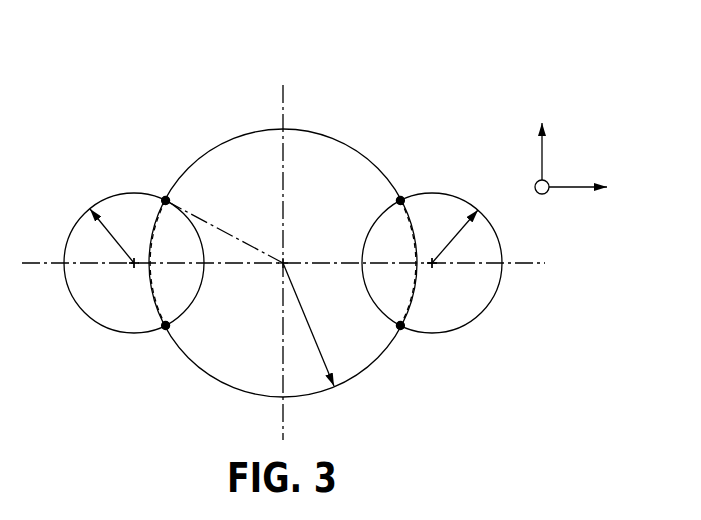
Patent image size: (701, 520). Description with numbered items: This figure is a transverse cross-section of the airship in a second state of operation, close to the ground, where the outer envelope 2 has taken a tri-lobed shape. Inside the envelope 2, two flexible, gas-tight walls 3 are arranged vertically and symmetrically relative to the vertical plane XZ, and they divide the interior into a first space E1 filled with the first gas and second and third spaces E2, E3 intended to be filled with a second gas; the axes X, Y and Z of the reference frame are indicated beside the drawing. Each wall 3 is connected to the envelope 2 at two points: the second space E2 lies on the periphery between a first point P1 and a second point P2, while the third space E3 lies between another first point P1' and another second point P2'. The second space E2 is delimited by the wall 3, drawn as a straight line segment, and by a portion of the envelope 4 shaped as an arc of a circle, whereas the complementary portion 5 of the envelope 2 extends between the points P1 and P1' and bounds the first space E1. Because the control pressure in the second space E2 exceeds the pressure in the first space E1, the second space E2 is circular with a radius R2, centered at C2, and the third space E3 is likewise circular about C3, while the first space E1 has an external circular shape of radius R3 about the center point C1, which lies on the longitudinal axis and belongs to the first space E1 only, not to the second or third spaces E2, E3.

The outer envelope 2 is at (270, 239).
The wall 3 is at (195, 219).
The portion of the envelope 4 is at (75, 228).
The complementary portion of the envelope 5 is at (247, 132).
The first point P1 is at (157, 185).
The second point P2 is at (157, 345).
The another first point P1' is at (415, 184).
The another second point P2' is at (415, 345).
The center point of the envelope C1 is at (283, 263).
The center of left circle C2 is at (134, 263).
The center of right circle C3 is at (432, 263).
The radius of the second space R2 is at (283, 238).
The radius of the first space R3 is at (314, 324).
The first space E1 is at (332, 192).
The second space E2 is at (103, 278).
The third space E3 is at (463, 282).
The X axis X is at (525, 205).
The Y axis Y is at (582, 203).
The Z axis Z is at (531, 144).